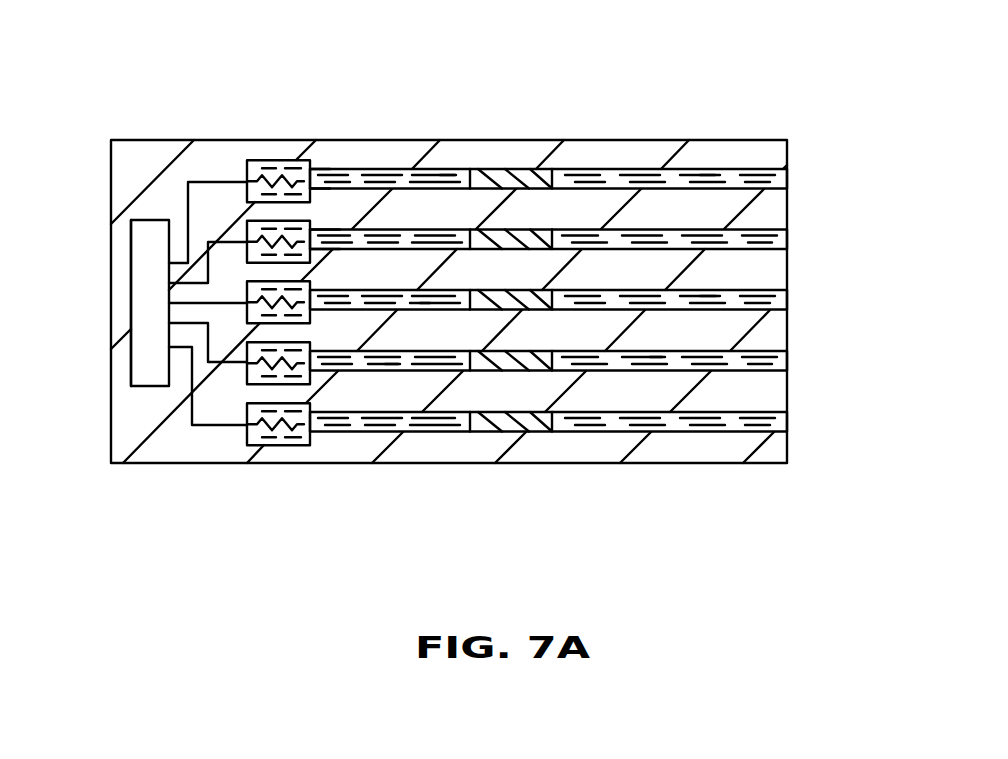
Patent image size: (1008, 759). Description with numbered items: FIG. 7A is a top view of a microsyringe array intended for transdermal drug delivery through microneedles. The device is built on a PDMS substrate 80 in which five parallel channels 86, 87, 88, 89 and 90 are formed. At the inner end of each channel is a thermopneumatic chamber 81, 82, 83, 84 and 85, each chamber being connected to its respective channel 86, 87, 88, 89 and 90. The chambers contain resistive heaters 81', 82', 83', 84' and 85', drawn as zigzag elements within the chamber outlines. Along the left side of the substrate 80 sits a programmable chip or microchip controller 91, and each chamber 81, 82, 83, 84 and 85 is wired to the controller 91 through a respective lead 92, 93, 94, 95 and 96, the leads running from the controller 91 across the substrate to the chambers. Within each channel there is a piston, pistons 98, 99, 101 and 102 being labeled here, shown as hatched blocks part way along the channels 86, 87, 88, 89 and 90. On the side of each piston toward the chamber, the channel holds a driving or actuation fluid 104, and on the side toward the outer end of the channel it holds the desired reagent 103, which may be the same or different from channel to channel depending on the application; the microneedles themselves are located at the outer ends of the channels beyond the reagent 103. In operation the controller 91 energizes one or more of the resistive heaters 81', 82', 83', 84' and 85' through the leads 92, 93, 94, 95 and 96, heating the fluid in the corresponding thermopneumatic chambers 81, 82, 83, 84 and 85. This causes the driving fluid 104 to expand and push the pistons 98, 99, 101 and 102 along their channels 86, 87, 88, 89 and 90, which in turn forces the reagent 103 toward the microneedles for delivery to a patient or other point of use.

The PDMS substrate 80 is at (155, 448).
The thermopneumatic chamber 81 is at (302, 461).
The resistive heater 81' is at (267, 469).
The thermopneumatic chamber 82 is at (325, 427).
The resistive heater 82' is at (175, 398).
The thermopneumatic chamber 83 is at (348, 210).
The resistive heater 83' is at (82, 303).
The thermopneumatic chamber 84 is at (350, 170).
The resistive heater 84' is at (247, 174).
The thermopneumatic chamber 85 is at (315, 150).
The resistive heater 85' is at (275, 132).
The channel 86 is at (780, 417).
The channel 87 is at (777, 358).
The channel 88 is at (775, 297).
The channel 89 is at (773, 237).
The channel 90 is at (773, 175).
The microchip controller 91 is at (172, 303).
The lead 92 is at (222, 427).
The lead 93 is at (205, 357).
The lead 94 is at (131, 322).
The lead 95 is at (205, 255).
The lead 96 is at (187, 217).
The piston 98 is at (503, 430).
The piston 99 is at (552, 370).
The piston 101 is at (553, 228).
The piston 102 is at (510, 168).
The reagent 103 is at (683, 228).
The driving fluid 104 is at (458, 168).